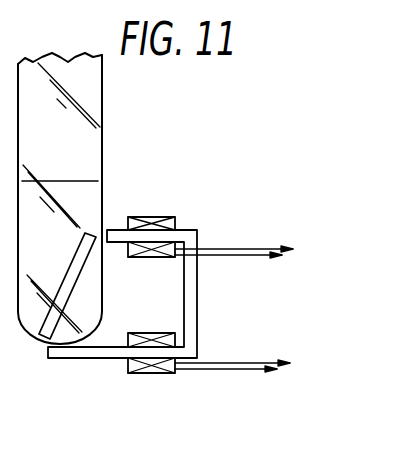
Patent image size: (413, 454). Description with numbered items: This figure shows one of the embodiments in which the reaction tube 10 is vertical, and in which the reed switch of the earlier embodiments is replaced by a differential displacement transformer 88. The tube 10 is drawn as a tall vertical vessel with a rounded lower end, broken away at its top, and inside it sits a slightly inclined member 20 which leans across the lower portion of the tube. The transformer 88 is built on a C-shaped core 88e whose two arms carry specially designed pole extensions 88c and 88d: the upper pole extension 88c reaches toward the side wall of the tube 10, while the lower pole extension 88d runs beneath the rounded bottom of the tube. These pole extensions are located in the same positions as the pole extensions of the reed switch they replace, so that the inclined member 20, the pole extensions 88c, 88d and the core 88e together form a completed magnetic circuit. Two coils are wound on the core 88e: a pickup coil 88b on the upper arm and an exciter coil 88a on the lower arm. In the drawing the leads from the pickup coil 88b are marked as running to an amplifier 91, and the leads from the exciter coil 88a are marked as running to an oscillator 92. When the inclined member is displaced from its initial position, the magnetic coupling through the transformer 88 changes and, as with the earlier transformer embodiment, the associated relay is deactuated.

The glass tube 10 is at (103, 113).
The tilted reflector plate 20 is at (48, 317).
The differential displacement transformer 88 is at (170, 305).
The exciter coil 88a is at (165, 373).
The pickup coil 88b is at (158, 218).
The pole extension 88c is at (113, 230).
The pole extension 88d is at (66, 352).
The core 88e is at (190, 310).
The amplifier 91 is at (350, 255).
The oscillator 92 is at (343, 371).